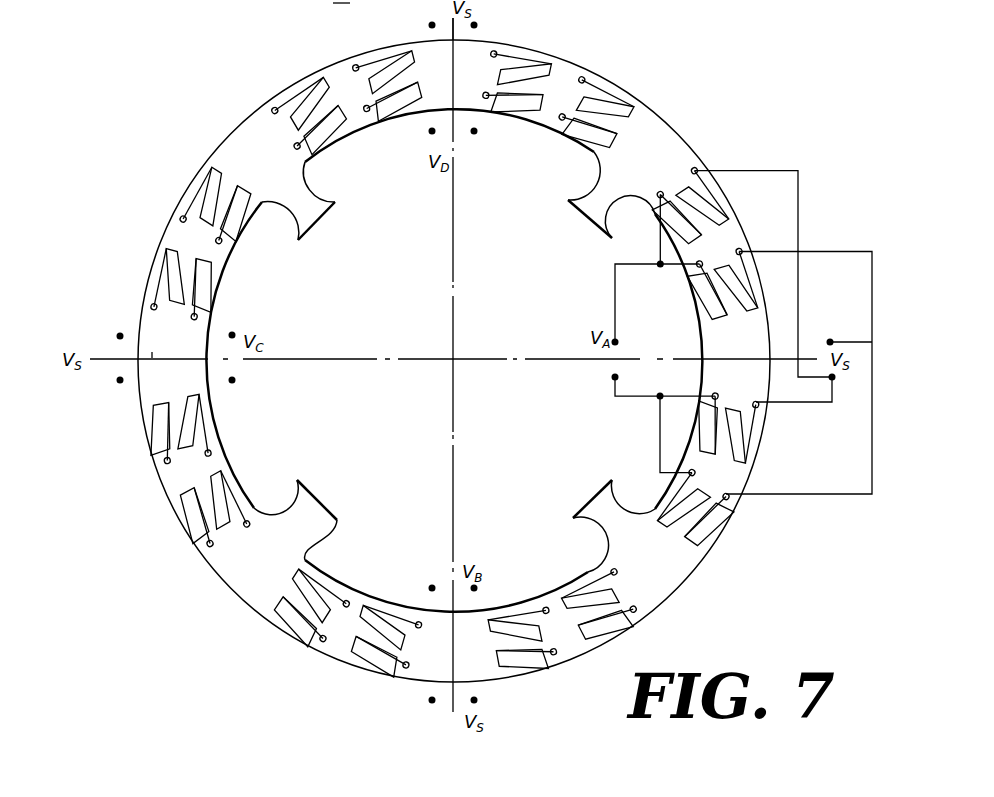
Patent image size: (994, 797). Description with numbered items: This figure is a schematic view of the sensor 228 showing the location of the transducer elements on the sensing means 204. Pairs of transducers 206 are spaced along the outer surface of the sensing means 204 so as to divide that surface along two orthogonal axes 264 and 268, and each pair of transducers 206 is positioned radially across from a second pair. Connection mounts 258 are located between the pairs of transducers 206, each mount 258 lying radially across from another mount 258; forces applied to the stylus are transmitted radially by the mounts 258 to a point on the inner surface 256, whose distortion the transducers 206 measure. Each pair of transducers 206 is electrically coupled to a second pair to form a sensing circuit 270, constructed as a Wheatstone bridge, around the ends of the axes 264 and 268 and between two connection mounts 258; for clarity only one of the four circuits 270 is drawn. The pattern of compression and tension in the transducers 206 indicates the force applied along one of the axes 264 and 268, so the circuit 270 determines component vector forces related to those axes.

The sensing means 204 is at (661, 117).
The transducer 206 is at (602, 93).
The sensor assembly 228 is at (320, 6).
The inner surface 256 is at (312, 153).
The connection mount 258 is at (607, 519).
The axis 264 is at (152, 358).
The axis 268 is at (455, 32).
The sensing circuit 270 is at (741, 171).